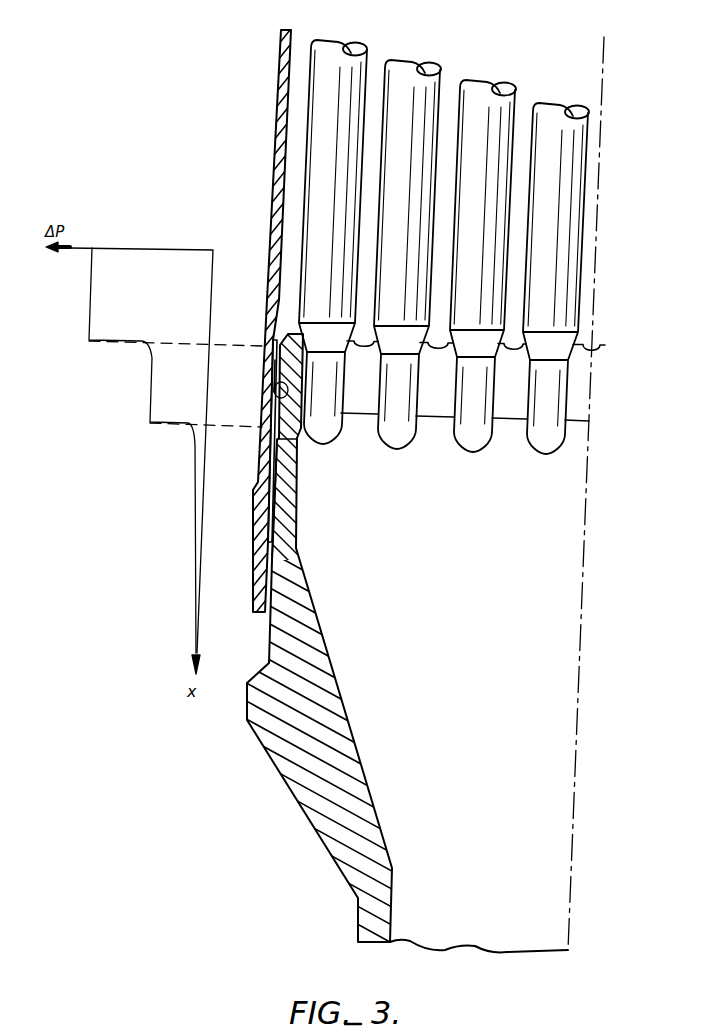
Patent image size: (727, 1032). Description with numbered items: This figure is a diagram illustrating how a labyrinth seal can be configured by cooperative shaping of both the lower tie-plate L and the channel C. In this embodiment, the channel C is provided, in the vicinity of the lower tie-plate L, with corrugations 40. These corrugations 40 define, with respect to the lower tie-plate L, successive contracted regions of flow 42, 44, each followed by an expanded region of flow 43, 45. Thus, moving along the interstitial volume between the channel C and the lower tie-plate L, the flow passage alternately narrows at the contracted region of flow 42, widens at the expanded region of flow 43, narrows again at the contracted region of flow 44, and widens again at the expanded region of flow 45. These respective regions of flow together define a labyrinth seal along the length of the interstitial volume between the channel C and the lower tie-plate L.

The corrugations 40 is at (272, 403).
The contracted region of flow 42 is at (282, 342).
The expanded region of flow 43 is at (270, 372).
The contracted region of flow 44 is at (284, 441).
The expanded region of flow 45 is at (283, 478).
The channel C is at (265, 168).
The lower tie-plate L is at (365, 755).